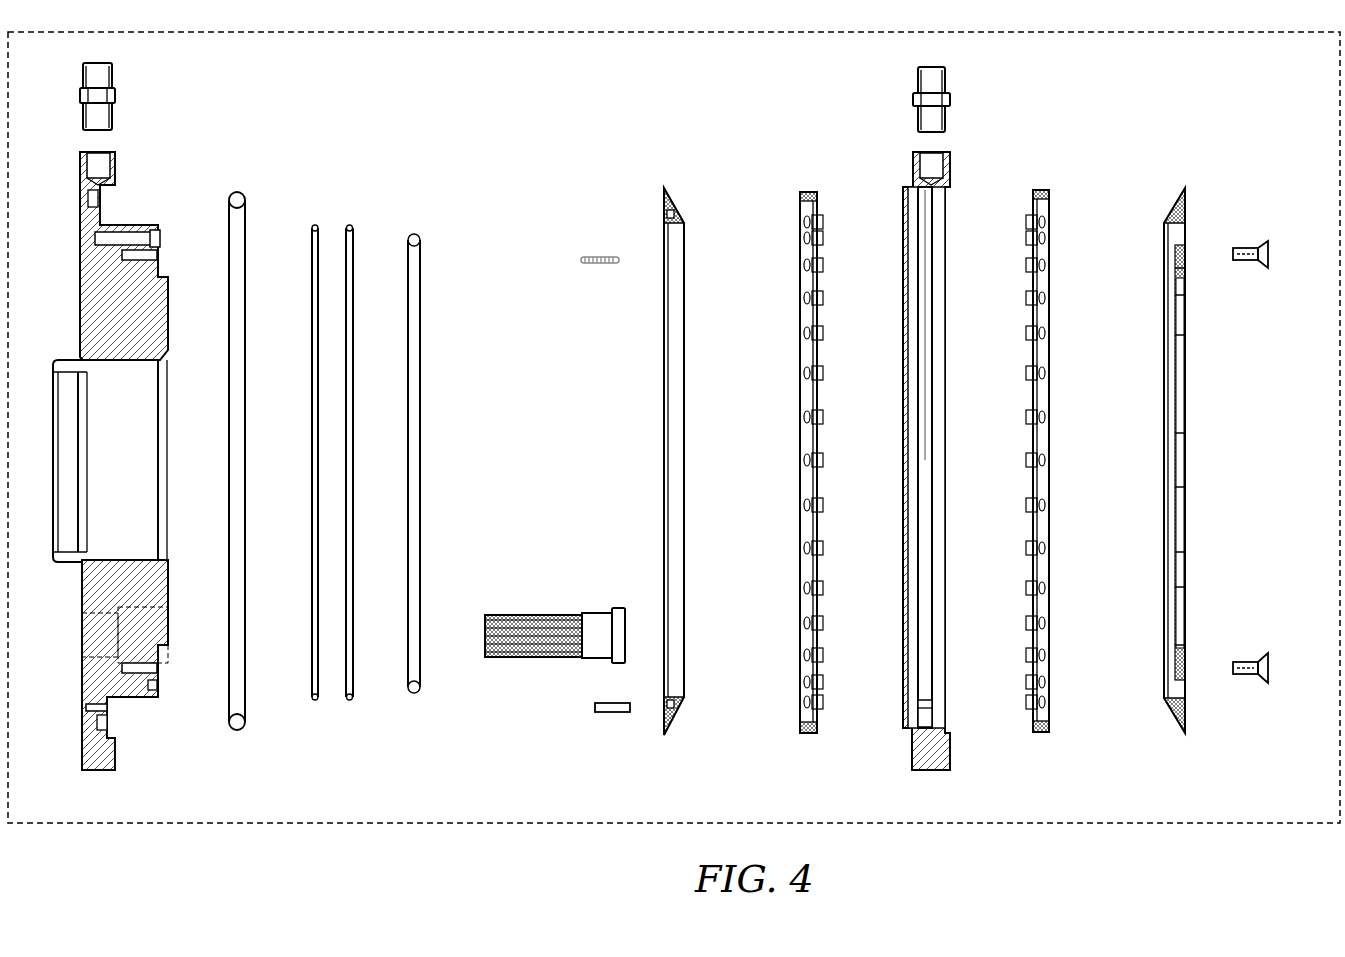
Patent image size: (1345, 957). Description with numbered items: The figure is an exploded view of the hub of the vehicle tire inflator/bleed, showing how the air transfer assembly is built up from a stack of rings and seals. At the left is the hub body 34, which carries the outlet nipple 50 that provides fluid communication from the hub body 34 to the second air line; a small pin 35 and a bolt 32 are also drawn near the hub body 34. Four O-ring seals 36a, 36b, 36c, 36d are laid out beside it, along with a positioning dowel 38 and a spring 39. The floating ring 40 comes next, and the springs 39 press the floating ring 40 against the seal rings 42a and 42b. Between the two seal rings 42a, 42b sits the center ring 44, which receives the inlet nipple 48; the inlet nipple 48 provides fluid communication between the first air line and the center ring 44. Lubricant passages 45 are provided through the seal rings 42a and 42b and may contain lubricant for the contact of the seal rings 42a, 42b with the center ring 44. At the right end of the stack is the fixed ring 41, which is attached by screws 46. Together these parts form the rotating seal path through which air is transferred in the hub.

The bolt 32 is at (535, 615).
The hub body 34 is at (100, 300).
The pin 35 is at (137, 225).
The O-ring seal 36a is at (238, 200).
The O-ring seal 36b is at (315, 226).
The O-ring seal 36c is at (350, 226).
The O-ring seal 36d is at (415, 238).
The positioning dowel 38 is at (605, 713).
The spring 39 is at (602, 265).
The floating ring 40 is at (680, 270).
The fixed ring 41 is at (1172, 245).
The seal ring 42a is at (800, 360).
The seal ring 42b is at (1046, 315).
The center ring 44 is at (940, 215).
The lubricant passage 45 is at (805, 415).
The screw 46 is at (1252, 255).
The inlet nipple 48 is at (935, 117).
The outlet nipple 50 is at (105, 112).